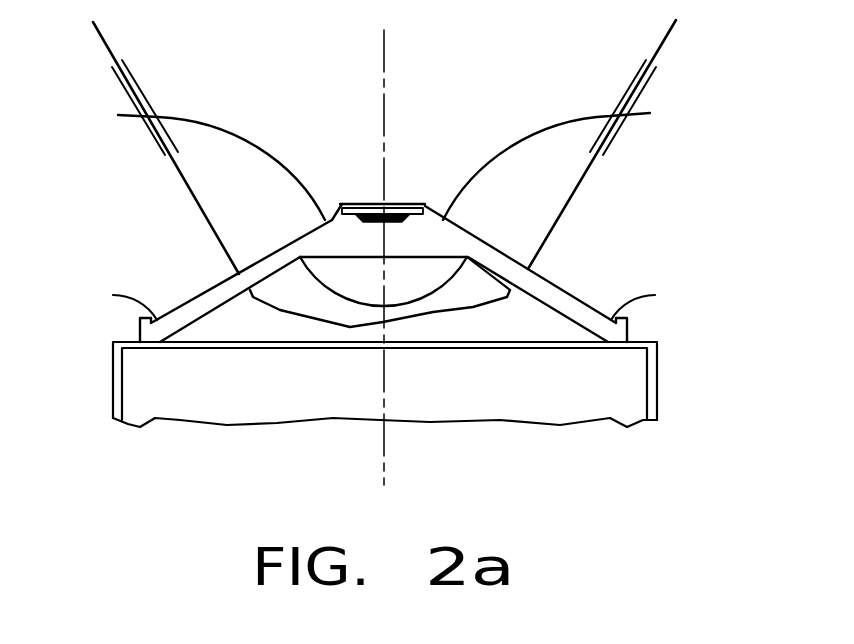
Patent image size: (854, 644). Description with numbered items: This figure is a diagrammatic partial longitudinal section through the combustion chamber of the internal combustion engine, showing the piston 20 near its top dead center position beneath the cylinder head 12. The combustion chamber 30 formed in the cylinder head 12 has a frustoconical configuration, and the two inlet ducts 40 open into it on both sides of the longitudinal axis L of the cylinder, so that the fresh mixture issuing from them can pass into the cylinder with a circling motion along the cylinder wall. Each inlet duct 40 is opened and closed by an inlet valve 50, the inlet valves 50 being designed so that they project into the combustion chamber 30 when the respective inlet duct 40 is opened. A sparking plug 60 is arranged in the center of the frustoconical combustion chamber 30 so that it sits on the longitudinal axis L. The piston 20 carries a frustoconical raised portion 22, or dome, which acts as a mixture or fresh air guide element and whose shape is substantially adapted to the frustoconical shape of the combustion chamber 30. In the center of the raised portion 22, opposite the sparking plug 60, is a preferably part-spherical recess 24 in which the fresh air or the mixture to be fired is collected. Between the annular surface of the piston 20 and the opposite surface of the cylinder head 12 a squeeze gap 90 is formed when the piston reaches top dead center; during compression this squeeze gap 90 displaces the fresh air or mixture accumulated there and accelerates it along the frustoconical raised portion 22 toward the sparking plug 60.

The cylinder head 12 is at (195, 298).
The piston 20 is at (600, 378).
The frustoconical raised portion 22 is at (558, 330).
The part-spherical recess 24 is at (445, 270).
The combustion chamber 30 is at (343, 235).
The inlet duct 40 is at (168, 202).
The inlet valve 50 is at (205, 220).
The sparking plug 60 is at (399, 203).
The squeeze gap 90 is at (113, 352).
The longitudinal axis L is at (384, 467).